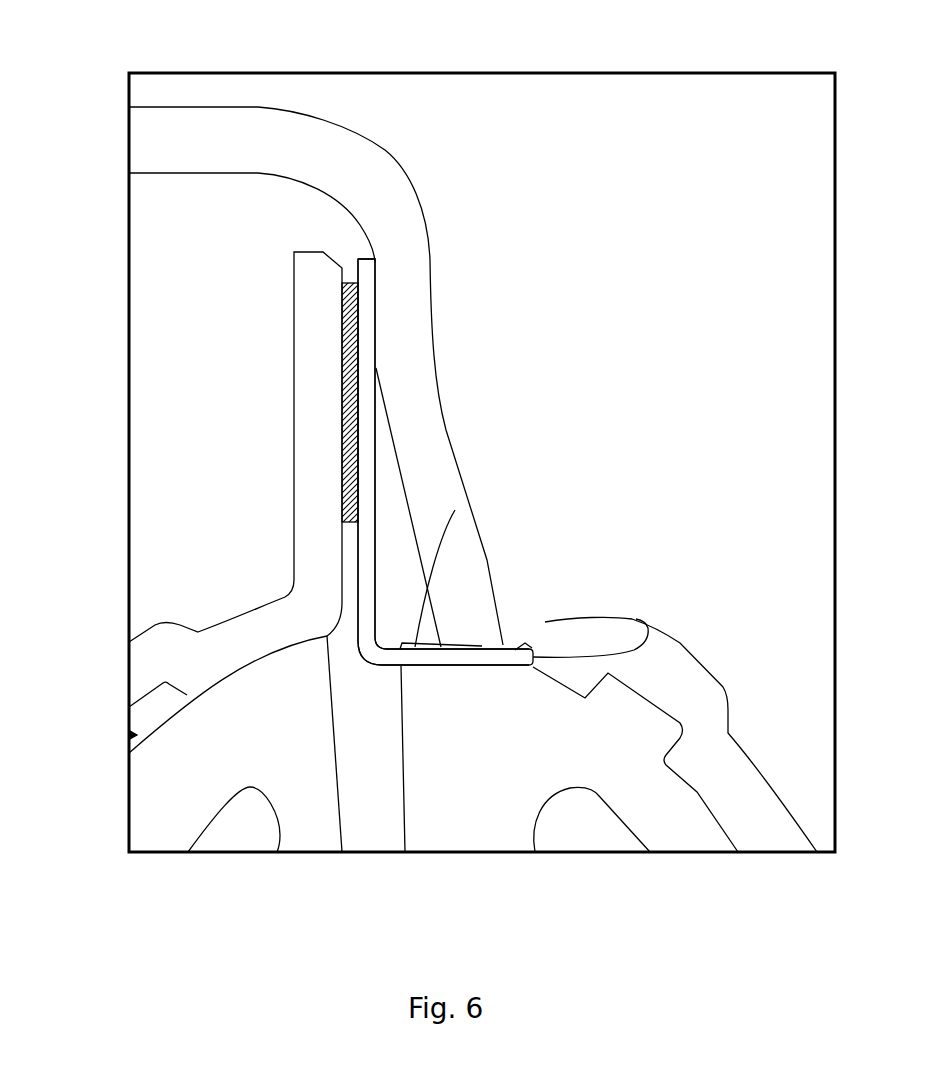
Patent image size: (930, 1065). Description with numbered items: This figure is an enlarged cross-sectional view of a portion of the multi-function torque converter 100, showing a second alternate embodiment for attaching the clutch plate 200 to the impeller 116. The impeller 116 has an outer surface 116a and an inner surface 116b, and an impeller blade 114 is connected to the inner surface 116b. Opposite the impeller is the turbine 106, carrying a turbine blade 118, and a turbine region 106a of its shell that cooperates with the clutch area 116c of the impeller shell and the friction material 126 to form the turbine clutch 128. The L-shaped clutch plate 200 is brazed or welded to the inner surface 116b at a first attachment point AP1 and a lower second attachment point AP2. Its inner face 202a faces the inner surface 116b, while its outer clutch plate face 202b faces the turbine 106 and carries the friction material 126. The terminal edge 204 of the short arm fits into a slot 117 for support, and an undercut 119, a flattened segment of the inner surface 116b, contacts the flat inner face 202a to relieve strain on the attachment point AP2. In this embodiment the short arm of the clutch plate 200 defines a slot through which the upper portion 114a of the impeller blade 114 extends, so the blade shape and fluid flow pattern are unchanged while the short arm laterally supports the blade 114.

The multi-function torque converter 100 is at (592, 204).
The turbine 106 is at (155, 625).
The turbine region 106a is at (294, 370).
The impeller blade 114 is at (638, 803).
The upper portion of impeller blade 114a is at (455, 510).
The impeller 116 is at (752, 665).
The outer surface of impeller 116a is at (393, 167).
The inner surface of impeller 116b is at (685, 787).
The clutch area of impeller shell 116c is at (452, 463).
The slot 117 is at (527, 646).
The turbine blade 118 is at (190, 788).
The undercut 119 is at (498, 646).
The friction material 126 is at (350, 347).
The turbine clutch 128 is at (343, 252).
The clutch plate 200 is at (368, 267).
The inner face of clutch plate 202a is at (376, 302).
The outer clutch plate face 202b is at (376, 428).
The terminal edge 204 is at (648, 622).
The first attachment point AP1 is at (376, 367).
The second attachment point AP2 is at (478, 626).